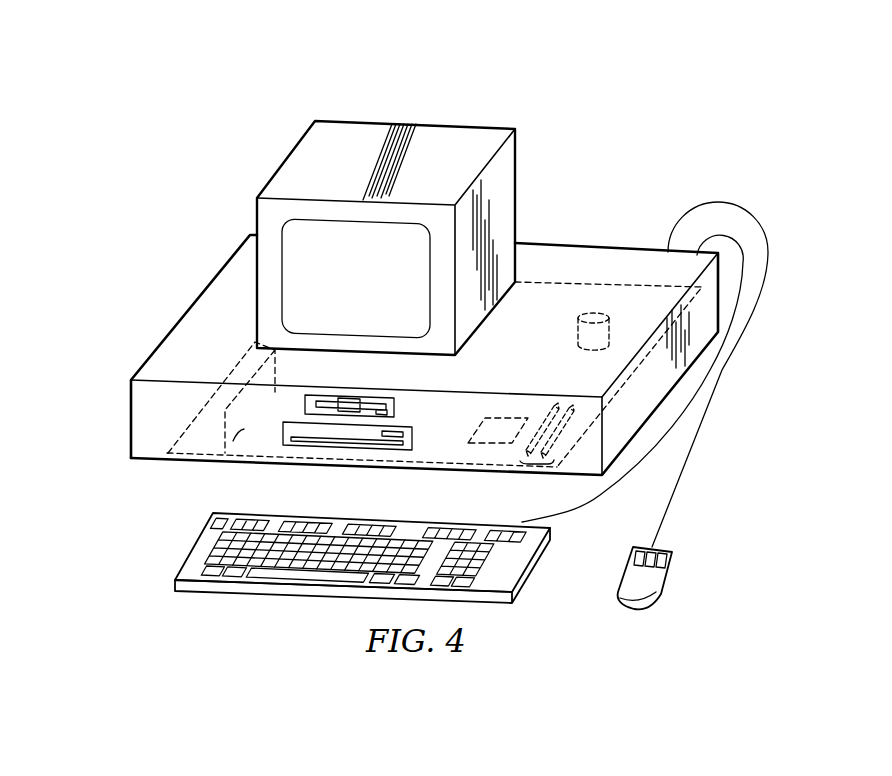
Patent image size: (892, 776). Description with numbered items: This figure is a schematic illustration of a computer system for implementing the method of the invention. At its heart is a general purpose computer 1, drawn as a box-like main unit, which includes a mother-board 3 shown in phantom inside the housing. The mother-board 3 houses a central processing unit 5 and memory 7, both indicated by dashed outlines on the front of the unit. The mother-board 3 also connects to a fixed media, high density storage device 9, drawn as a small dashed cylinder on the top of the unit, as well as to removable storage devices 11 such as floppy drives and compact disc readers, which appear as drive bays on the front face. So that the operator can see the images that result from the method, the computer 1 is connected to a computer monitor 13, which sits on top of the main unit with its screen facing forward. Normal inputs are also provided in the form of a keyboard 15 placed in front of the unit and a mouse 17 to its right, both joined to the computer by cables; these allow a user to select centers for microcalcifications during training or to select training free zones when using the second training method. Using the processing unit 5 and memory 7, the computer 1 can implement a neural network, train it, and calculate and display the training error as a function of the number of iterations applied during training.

The general purpose computer 1 is at (190, 323).
The mother-board 3 is at (203, 445).
The central processing unit 5 is at (490, 440).
The memory 7 is at (537, 463).
The fixed media, high density storage device 9 is at (580, 318).
The removable storage devices 11 is at (283, 405).
The computer monitor 13 is at (350, 135).
The keyboard 15 is at (526, 557).
The mouse 17 is at (655, 575).